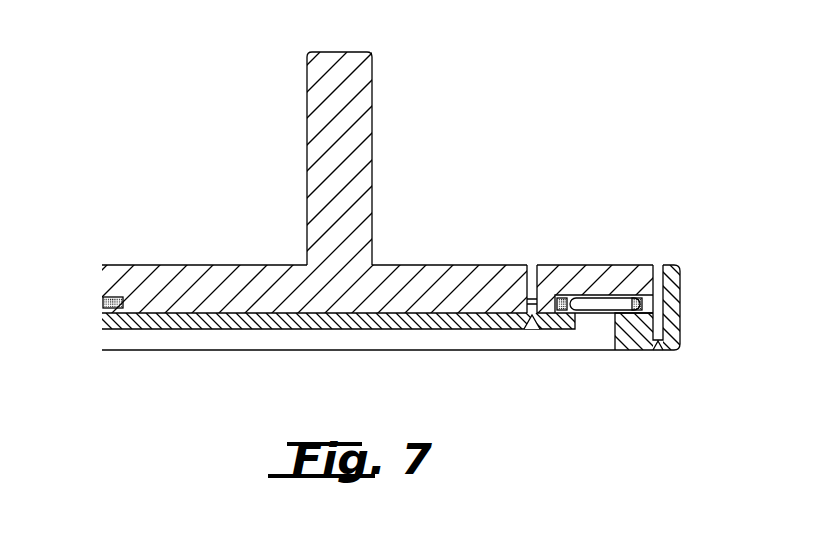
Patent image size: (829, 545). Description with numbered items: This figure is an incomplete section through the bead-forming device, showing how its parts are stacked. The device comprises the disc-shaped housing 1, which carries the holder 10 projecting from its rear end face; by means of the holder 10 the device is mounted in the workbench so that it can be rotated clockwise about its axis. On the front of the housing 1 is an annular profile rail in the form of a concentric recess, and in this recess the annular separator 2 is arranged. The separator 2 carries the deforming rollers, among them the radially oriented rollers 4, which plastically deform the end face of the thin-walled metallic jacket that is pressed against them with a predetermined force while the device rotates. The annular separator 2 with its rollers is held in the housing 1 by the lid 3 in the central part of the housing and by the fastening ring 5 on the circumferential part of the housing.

The housing 1 is at (416, 287).
The annular separator 2 is at (673, 278).
The lid 3 is at (487, 318).
The radially oriented rollers 4 is at (603, 303).
The fastening ring 5 is at (630, 337).
The holder 10 is at (347, 172).